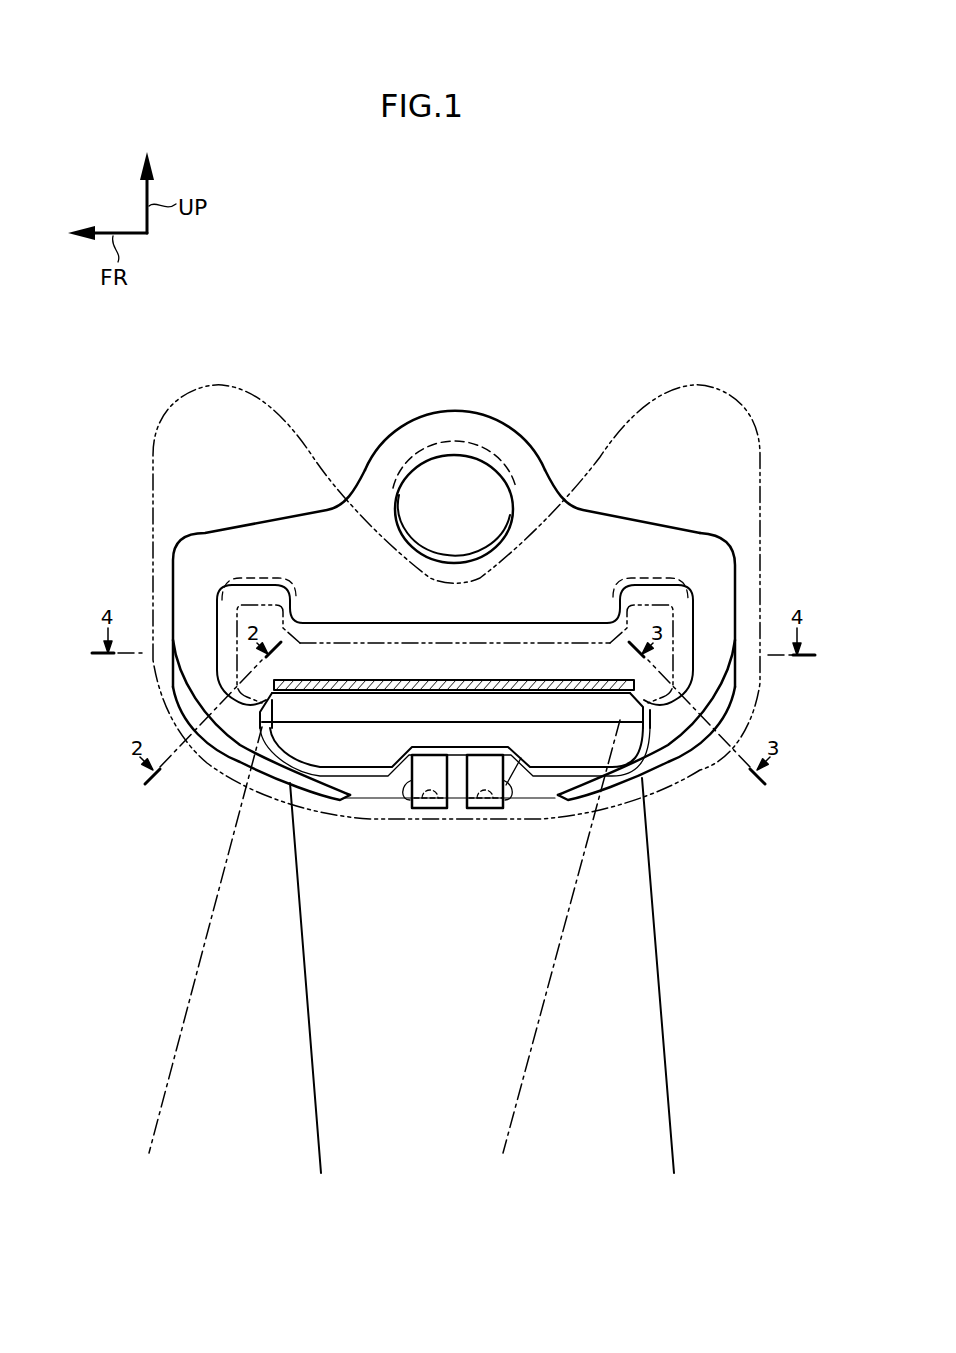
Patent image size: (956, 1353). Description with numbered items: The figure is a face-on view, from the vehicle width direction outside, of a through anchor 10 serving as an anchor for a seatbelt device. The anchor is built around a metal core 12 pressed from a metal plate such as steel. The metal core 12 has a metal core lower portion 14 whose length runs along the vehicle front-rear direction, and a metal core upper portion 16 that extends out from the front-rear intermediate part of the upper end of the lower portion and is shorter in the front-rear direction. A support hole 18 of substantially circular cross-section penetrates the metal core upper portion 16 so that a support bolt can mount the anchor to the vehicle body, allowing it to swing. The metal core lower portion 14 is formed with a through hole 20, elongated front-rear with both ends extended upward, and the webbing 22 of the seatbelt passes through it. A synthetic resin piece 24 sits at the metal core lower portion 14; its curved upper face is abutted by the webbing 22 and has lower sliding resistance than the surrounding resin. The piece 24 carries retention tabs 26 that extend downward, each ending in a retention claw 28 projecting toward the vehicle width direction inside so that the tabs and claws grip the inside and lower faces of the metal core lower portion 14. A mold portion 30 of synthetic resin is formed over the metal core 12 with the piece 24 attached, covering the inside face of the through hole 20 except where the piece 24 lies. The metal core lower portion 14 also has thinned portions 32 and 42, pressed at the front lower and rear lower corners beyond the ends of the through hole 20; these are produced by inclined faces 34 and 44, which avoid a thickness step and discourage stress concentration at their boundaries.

The through anchor 10 is at (646, 337).
The metal core 12 is at (643, 518).
The metal core lower portion 14 is at (698, 546).
The metal core upper portion 16 is at (505, 435).
The support hole 18 is at (447, 555).
The through hole 20 is at (514, 595).
The webbing 22 is at (420, 680).
The piece 24 is at (367, 760).
The retention tabs 26 is at (408, 796).
The retention claws 28 is at (431, 805).
The mold portion 30 is at (758, 573).
The thinned portion 32 is at (210, 755).
The inclined face 34 is at (228, 758).
The thinned portion 42 is at (697, 748).
The inclined face 44 is at (722, 703).